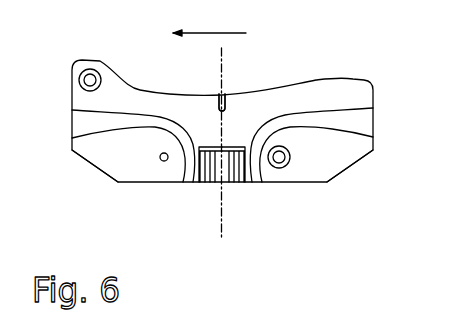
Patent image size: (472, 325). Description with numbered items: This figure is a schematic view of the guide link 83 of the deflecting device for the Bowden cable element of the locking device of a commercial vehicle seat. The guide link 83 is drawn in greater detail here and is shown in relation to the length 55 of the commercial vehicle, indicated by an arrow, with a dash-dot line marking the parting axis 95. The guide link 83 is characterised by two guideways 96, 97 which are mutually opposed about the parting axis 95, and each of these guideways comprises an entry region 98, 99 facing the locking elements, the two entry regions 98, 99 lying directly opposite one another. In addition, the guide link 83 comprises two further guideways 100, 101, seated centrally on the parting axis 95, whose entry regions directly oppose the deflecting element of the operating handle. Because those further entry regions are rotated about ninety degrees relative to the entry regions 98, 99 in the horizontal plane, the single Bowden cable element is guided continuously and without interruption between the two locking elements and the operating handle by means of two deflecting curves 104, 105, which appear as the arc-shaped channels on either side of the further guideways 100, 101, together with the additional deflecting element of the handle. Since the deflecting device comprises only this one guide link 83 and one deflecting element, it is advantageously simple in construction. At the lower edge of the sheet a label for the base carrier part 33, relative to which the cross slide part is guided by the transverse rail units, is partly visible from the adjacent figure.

The length of the commercial vehicle 55 is at (207, 32).
The guide link 83 is at (246, 79).
The parting axis 95 is at (220, 204).
The guideway 96 is at (323, 186).
The guideway 97 is at (119, 188).
The entry region 98 is at (359, 123).
The entry region 99 is at (83, 125).
The further guideway 100 is at (242, 177).
The further guideway 101 is at (197, 178).
The deflecting curve 104 is at (283, 136).
The deflecting curve 105 is at (161, 131).
The base carrier part 33 is at (469, 285).